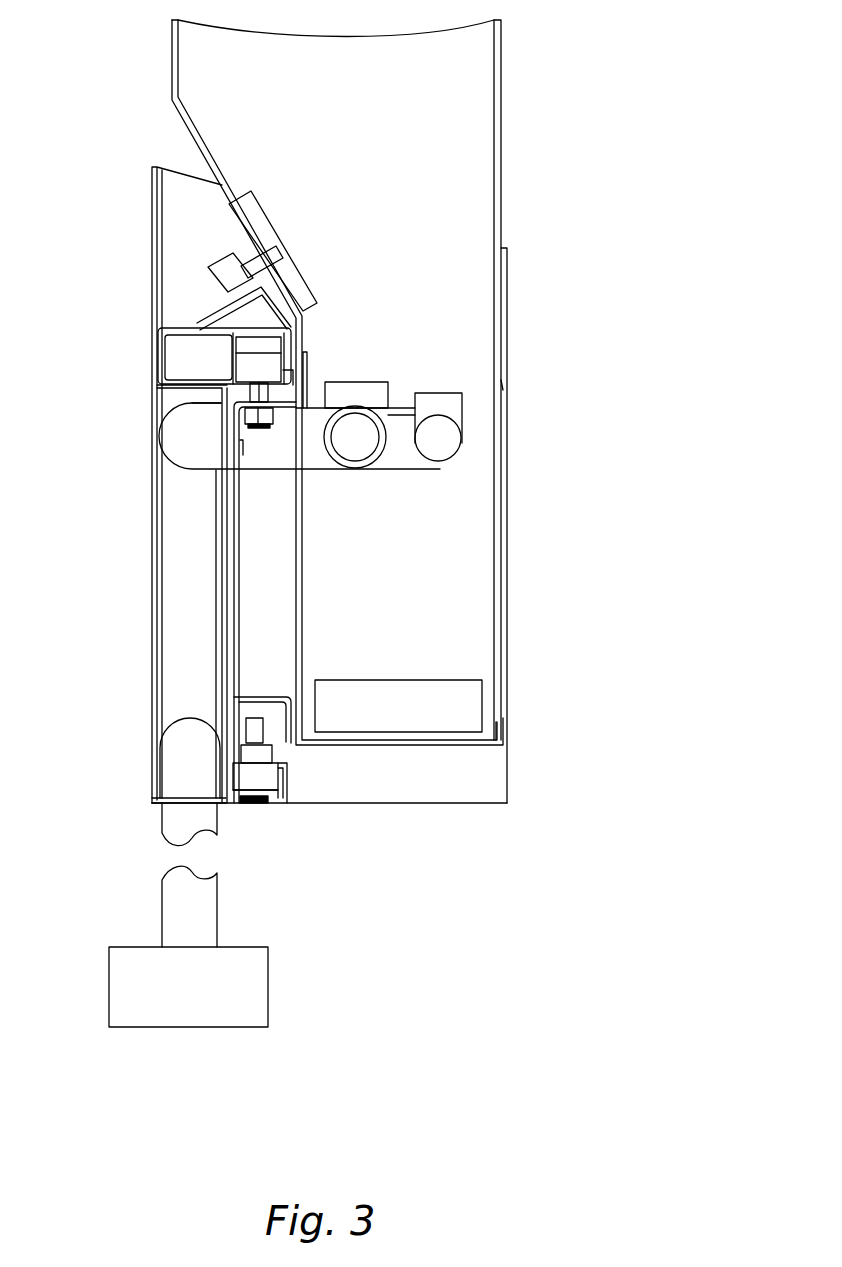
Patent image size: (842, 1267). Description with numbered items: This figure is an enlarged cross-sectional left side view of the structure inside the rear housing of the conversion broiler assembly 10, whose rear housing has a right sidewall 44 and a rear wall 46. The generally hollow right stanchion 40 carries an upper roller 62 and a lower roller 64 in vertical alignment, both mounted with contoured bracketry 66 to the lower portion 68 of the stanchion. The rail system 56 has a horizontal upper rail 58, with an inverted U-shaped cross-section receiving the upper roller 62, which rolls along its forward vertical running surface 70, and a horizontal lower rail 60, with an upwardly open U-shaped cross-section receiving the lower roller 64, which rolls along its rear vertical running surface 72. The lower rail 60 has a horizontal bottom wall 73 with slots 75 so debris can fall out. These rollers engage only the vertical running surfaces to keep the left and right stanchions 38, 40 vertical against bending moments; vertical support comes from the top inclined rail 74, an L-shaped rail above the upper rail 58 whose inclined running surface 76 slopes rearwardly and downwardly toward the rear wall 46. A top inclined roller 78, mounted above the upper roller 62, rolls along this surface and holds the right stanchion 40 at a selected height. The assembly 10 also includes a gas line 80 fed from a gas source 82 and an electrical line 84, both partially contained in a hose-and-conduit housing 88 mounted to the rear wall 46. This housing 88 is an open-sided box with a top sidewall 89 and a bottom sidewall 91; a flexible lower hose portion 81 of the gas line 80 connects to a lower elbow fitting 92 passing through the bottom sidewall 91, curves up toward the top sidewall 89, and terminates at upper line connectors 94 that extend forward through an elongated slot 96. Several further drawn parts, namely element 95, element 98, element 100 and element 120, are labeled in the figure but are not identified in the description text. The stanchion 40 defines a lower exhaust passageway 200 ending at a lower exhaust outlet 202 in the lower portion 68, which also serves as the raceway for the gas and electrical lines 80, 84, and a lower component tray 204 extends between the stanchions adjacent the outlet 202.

The conversion broiler assembly 10 is at (546, 202).
The left stanchion 38 is at (503, 390).
The right stanchion 40 is at (214, 113).
The right sidewall 44 is at (490, 782).
The rear wall 46 is at (152, 503).
The rail system 56 is at (293, 756).
The upper rail 58 is at (278, 360).
The lower rail 60 is at (268, 806).
The upper roller 62 is at (262, 312).
The lower roller 64 is at (290, 785).
The contoured bracketry 66 is at (300, 378).
The lower portion 68 is at (480, 495).
The forward vertical running surface 70 is at (302, 356).
The rear vertical running surface 72 is at (250, 728).
The bottom wall 73 is at (233, 806).
The top inclined rail 74 is at (283, 300).
The slots 75 is at (257, 806).
The inclined running surface 76 is at (218, 304).
The top inclined roller 78 is at (222, 266).
The gas line 80 is at (262, 458).
The lower hose portion 81 is at (180, 568).
The gas source 82 is at (109, 973).
The electrical line 84 is at (398, 425).
The hose-and-conduit housing 88 is at (227, 643).
The top sidewall 89 is at (187, 394).
The bottom sidewall 91 is at (160, 797).
The lower elbow fitting 92 is at (185, 757).
The upper line connectors 94 is at (178, 440).
The supply tube 95 is at (150, 803).
The elongated slot 96 is at (190, 403).
The roller 98 is at (368, 468).
The roller 100 is at (440, 462).
The roller shaft 120 is at (340, 468).
The lower exhaust passageway 200 is at (447, 257).
The lower exhaust outlet 202 is at (418, 680).
The lower component tray 204 is at (507, 732).